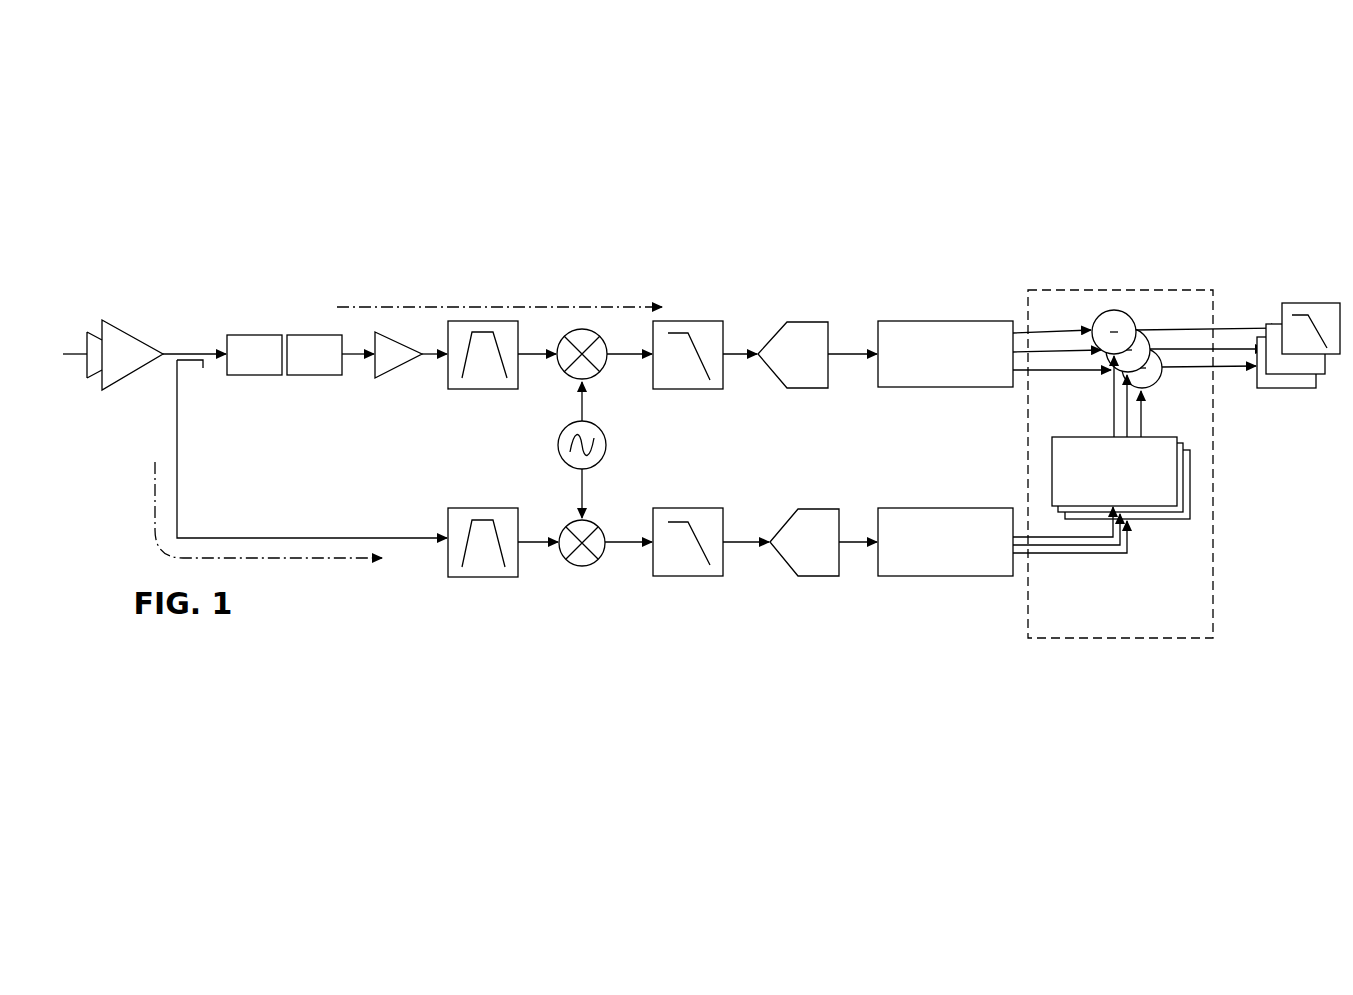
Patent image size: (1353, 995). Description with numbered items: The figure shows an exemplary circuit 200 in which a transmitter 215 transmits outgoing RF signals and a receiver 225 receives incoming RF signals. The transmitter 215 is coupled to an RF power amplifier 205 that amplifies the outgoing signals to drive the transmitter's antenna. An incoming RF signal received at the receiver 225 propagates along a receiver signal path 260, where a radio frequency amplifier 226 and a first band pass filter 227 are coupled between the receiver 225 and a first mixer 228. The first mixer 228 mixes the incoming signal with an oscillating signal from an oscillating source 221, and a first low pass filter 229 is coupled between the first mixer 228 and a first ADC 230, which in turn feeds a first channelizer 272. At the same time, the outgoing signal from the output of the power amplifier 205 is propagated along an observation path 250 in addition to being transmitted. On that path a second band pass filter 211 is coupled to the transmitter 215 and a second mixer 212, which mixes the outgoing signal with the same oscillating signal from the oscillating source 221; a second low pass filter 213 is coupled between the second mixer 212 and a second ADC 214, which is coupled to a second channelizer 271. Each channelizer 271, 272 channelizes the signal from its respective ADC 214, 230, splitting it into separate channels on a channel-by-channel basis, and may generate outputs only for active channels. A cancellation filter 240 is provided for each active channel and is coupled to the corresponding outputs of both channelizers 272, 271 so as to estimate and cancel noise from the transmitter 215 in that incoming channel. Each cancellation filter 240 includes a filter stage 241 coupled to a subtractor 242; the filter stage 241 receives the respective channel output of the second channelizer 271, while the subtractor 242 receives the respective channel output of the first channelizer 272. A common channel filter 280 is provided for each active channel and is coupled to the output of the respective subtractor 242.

The circuit 200 is at (177, 281).
The RF power amplifier 205 is at (110, 382).
The transmitter 215 is at (238, 375).
The receiver 225 is at (307, 335).
The radio frequency amplifier 226 is at (395, 370).
The first band pass filter 227 is at (475, 378).
The first mixer 228 is at (588, 372).
The first low pass filter 229 is at (697, 330).
The first ADC 230 is at (810, 330).
The receiver signal path 260 is at (499, 294).
The observation path 250 is at (268, 539).
The second band pass filter 211 is at (475, 567).
The second mixer 212 is at (585, 561).
The second low pass filter 213 is at (683, 563).
The second ADC 214 is at (817, 562).
The oscillating source 221 is at (598, 455).
The second channelizer 271 is at (929, 568).
The first channelizer 272 is at (929, 381).
The cancellation filter 240 is at (1167, 630).
The filter stage 241 is at (1167, 499).
The subtractor 242 is at (1125, 318).
The common channel filter 280 is at (1298, 368).